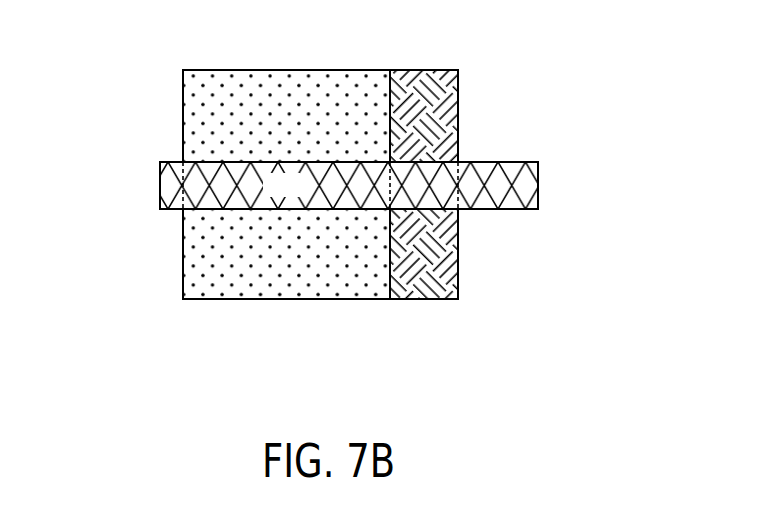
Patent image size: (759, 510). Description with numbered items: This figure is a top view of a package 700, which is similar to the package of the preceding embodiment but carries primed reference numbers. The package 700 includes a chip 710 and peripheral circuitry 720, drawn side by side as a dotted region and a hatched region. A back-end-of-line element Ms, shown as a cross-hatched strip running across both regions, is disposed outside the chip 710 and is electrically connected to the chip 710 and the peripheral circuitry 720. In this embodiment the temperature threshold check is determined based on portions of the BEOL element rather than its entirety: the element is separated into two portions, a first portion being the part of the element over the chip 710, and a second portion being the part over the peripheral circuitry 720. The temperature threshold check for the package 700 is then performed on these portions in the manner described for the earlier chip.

The package 700 is at (438, 190).
The chip 710 is at (237, 158).
The peripheral circuitry 720 is at (421, 158).